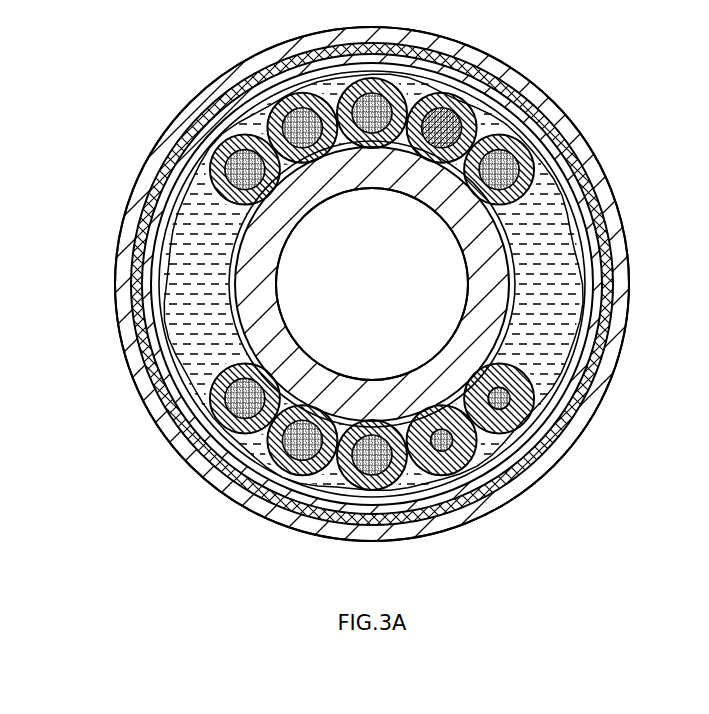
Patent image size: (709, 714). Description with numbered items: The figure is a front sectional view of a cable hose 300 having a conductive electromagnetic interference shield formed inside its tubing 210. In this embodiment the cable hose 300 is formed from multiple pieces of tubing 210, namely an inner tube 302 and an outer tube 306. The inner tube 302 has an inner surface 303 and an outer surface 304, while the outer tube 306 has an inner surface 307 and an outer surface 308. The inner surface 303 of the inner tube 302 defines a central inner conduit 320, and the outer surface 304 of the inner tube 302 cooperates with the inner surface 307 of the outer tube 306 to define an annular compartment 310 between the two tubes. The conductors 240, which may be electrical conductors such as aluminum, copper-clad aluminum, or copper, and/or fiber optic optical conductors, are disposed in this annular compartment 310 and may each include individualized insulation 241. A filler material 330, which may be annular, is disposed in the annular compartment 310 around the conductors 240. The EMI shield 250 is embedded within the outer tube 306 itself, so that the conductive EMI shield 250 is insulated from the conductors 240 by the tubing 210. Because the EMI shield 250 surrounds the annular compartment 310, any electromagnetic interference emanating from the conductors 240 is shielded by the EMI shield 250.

The cable hose 300 is at (190, 540).
The tubing 210 is at (528, 88).
The EMI shield 250 is at (583, 142).
The outer tube 306 is at (149, 418).
The outer surface 308 is at (126, 371).
The inner surface 307 is at (159, 270).
The filler material 330 is at (250, 121).
The annular compartment 310 is at (514, 258).
The outer surface 304 is at (519, 238).
The inner tube 302 is at (480, 231).
The inner surface 303 is at (438, 350).
The inner conduit 320 is at (360, 289).
The individualized insulation 241 is at (225, 141).
The conductors 240 is at (226, 164).